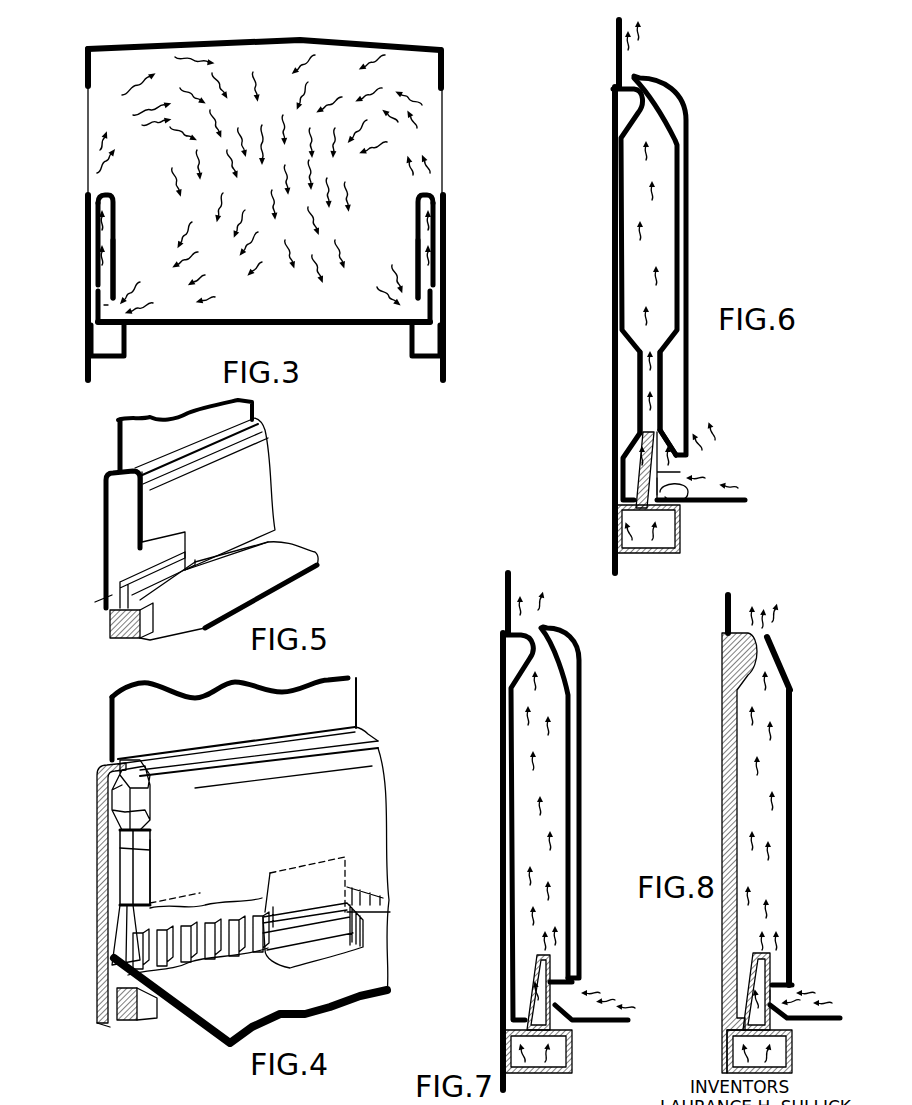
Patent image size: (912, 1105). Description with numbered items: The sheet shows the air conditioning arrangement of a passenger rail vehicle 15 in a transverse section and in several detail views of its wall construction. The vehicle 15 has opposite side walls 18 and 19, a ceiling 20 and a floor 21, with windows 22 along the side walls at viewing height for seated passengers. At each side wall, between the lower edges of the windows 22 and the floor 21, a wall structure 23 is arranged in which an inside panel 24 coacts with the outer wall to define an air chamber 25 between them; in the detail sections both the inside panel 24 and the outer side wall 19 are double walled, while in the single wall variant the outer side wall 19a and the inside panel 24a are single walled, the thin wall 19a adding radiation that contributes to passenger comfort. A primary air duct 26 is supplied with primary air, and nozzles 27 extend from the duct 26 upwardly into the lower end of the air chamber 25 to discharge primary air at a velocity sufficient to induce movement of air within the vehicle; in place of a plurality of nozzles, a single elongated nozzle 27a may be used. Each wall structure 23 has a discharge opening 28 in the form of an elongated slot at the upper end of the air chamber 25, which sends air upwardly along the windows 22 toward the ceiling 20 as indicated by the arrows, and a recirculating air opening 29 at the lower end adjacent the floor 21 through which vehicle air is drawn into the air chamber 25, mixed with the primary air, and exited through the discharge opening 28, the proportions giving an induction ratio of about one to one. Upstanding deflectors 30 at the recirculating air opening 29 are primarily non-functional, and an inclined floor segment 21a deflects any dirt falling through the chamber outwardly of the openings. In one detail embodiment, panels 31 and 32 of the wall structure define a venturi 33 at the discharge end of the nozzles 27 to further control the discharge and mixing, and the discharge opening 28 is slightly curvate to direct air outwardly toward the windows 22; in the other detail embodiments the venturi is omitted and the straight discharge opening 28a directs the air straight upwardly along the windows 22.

In FIG. 3, the rail vehicle 15 is at (442, 52).
In FIG. 3, the side wall 18 is at (447, 294).
In FIG. 3, the side wall 19 is at (84, 314).
In FIG. 4, the side wall 19 is at (97, 888).
In FIG. 6, the side wall 19 is at (612, 312).
In FIG. 7, the side wall 19 is at (481, 861).
In FIG. 8, the outer side wall 19a is at (721, 760).
In FIG. 3, the ceiling 20 is at (291, 44).
In FIG. 3, the floor 21 is at (177, 327).
In FIG. 4, the floor 21 is at (187, 1025).
In FIG. 6, the floor 21 is at (735, 505).
In FIG. 7, the floor 21 is at (608, 1025).
In FIG. 8, the floor 21 is at (820, 1022).
In FIG. 6, the floor segment 21a is at (690, 505).
In FIG. 3, the windows 22 is at (88, 137).
In FIG. 4, the windows 22 is at (112, 716).
In FIG. 6, the windows 22 is at (614, 44).
In FIG. 7, the windows 22 is at (504, 590).
In FIG. 8, the windows 22 is at (724, 612).
In FIG. 3, the wall structure 23 is at (114, 228).
In FIG. 4, the wall structure 23 is at (358, 798).
In FIG. 6, the wall structure 23 is at (690, 236).
In FIG. 7, the wall structure 23 is at (588, 700).
In FIG. 8, the wall structure 23 is at (776, 662).
In FIG. 3, the inside panel 24 is at (116, 270).
In FIG. 4, the inside panel 24 is at (160, 849).
In FIG. 6, the inside panel 24 is at (688, 280).
In FIG. 7, the inside panel 24 is at (580, 783).
In FIG. 8, the inside panel 24a is at (793, 772).
In FIG. 3, the air chamber 25 is at (96, 252).
In FIG. 4, the air chamber 25 is at (125, 850).
In FIG. 6, the air chamber 25 is at (672, 225).
In FIG. 7, the air chamber 25 is at (545, 757).
In FIG. 8, the air chamber 25 is at (775, 735).
In FIG. 3, the primary air duct 26 is at (103, 340).
In FIG. 4, the primary air duct 26 is at (130, 1012).
In FIG. 6, the primary air duct 26 is at (655, 540).
In FIG. 7, the primary air duct 26 is at (547, 1060).
In FIG. 8, the primary air duct 26 is at (741, 1049).
In FIG. 3, the nozzles 27 is at (92, 302).
In FIG. 4, the nozzles 27 is at (125, 932).
In FIG. 6, the nozzles 27 is at (697, 469).
In FIG. 7, the nozzles 27 is at (553, 968).
In FIG. 8, the nozzles 27 is at (772, 970).
In FIG. 5, the single elongated nozzle 27a is at (118, 597).
In FIG. 4, the discharge opening 28 is at (125, 762).
In FIG. 6, the discharge opening 28 is at (636, 74).
In FIG. 7, the discharge opening 28a is at (538, 628).
In FIG. 8, the discharge opening 28a is at (766, 633).
In FIG. 3, the recirculating air opening 29 is at (117, 307).
In FIG. 6, the recirculating air opening 29 is at (684, 475).
In FIG. 7, the recirculating air opening 29 is at (585, 996).
In FIG. 8, the recirculating air opening 29 is at (783, 996).
In FIG. 4, the upstanding deflectors 30 is at (178, 957).
In FIG. 6, the panel 31 is at (640, 393).
In FIG. 6, the panel 32 is at (665, 385).
In FIG. 6, the venturi 33 is at (660, 410).